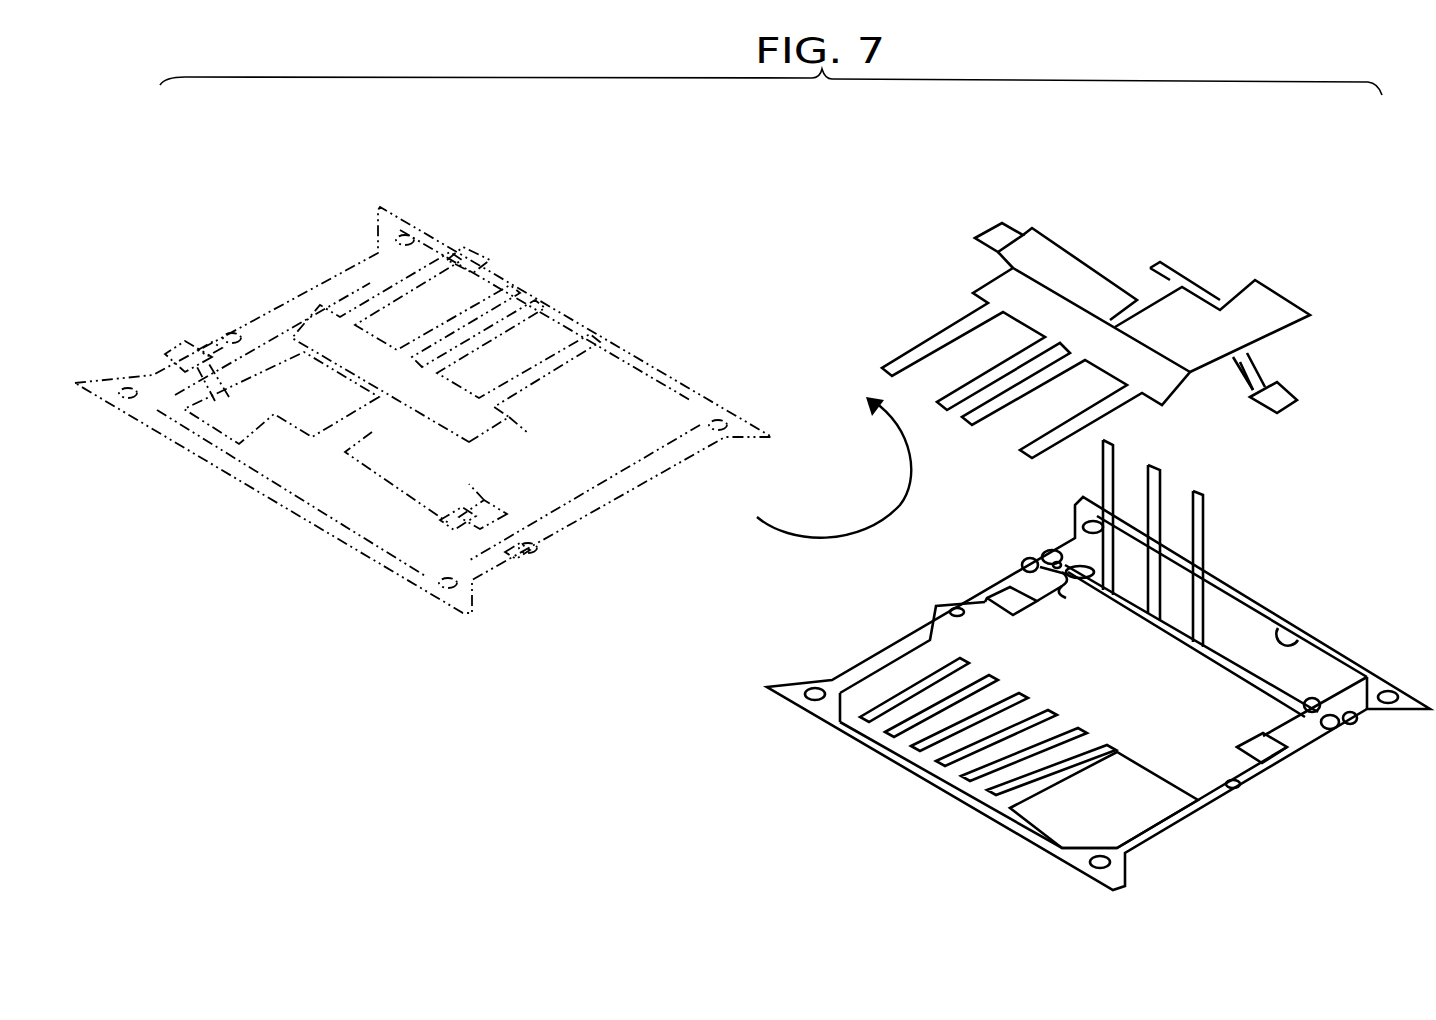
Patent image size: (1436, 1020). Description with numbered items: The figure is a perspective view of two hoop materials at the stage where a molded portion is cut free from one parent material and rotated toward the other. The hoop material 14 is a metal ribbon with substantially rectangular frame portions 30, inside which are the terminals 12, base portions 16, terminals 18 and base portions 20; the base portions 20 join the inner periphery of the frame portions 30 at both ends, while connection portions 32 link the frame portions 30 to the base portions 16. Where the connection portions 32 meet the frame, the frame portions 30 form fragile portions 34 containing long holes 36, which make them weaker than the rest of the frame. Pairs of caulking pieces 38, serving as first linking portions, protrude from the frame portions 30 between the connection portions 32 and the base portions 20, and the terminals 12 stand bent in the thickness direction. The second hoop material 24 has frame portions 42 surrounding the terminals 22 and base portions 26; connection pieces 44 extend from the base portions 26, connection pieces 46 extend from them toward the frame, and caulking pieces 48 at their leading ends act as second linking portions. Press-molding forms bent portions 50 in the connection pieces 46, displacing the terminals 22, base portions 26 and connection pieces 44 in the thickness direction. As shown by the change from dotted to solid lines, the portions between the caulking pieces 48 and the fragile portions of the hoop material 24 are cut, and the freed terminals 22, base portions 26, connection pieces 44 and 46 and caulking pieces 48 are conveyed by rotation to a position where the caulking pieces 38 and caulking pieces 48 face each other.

The terminals 12 is at (1152, 470).
The hoop material 14 is at (1292, 600).
The base portions 16 is at (1216, 663).
The terminals 18 is at (914, 752).
The base portions 20 is at (1141, 766).
The terminals 22 is at (930, 343).
The hoop material 24 is at (630, 272).
The base portions 26 is at (528, 433).
The frame portions 30 is at (1300, 631).
The connection portions 32 is at (1058, 582).
The fragile portions 34 is at (1050, 550).
The long holes 36 is at (1030, 554).
The caulking pieces 38 is at (1015, 605).
The frame portions 42 is at (670, 378).
The connection pieces 44 is at (1135, 309).
The connection pieces 46 is at (1090, 269).
The caulking pieces 48 is at (990, 233).
The bent portions 50 is at (1237, 362).